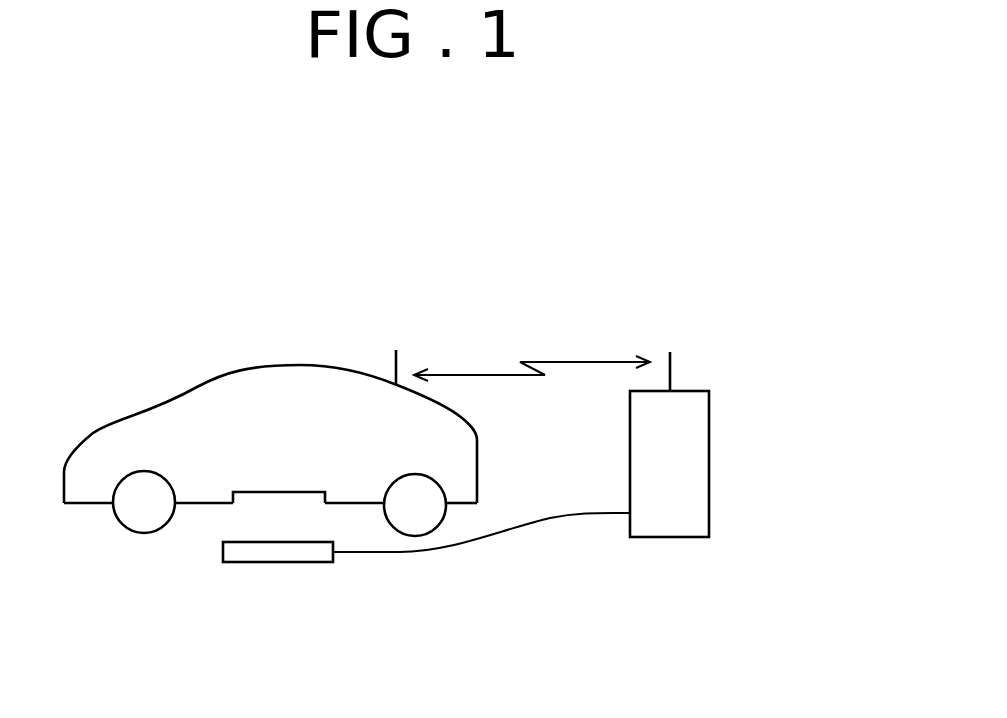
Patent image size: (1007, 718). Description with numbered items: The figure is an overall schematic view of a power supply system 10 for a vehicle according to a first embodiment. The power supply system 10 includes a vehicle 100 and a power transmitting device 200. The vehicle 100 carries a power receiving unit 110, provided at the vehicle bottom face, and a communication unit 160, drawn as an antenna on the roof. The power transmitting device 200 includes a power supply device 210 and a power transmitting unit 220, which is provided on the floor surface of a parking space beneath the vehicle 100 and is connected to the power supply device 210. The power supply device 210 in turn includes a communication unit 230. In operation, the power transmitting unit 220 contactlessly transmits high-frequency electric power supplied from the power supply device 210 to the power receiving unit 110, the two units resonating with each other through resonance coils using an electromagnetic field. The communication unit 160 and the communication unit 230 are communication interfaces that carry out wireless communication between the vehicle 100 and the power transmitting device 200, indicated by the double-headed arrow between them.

The power supply system 10 is at (105, 277).
The vehicle 100 is at (277, 365).
The power receiving unit 110 is at (253, 497).
The communication unit 160 is at (395, 363).
The power transmitting device 200 is at (708, 580).
The power supply device 210 is at (710, 465).
The power transmitting unit 220 is at (223, 552).
The communication unit 230 is at (672, 370).